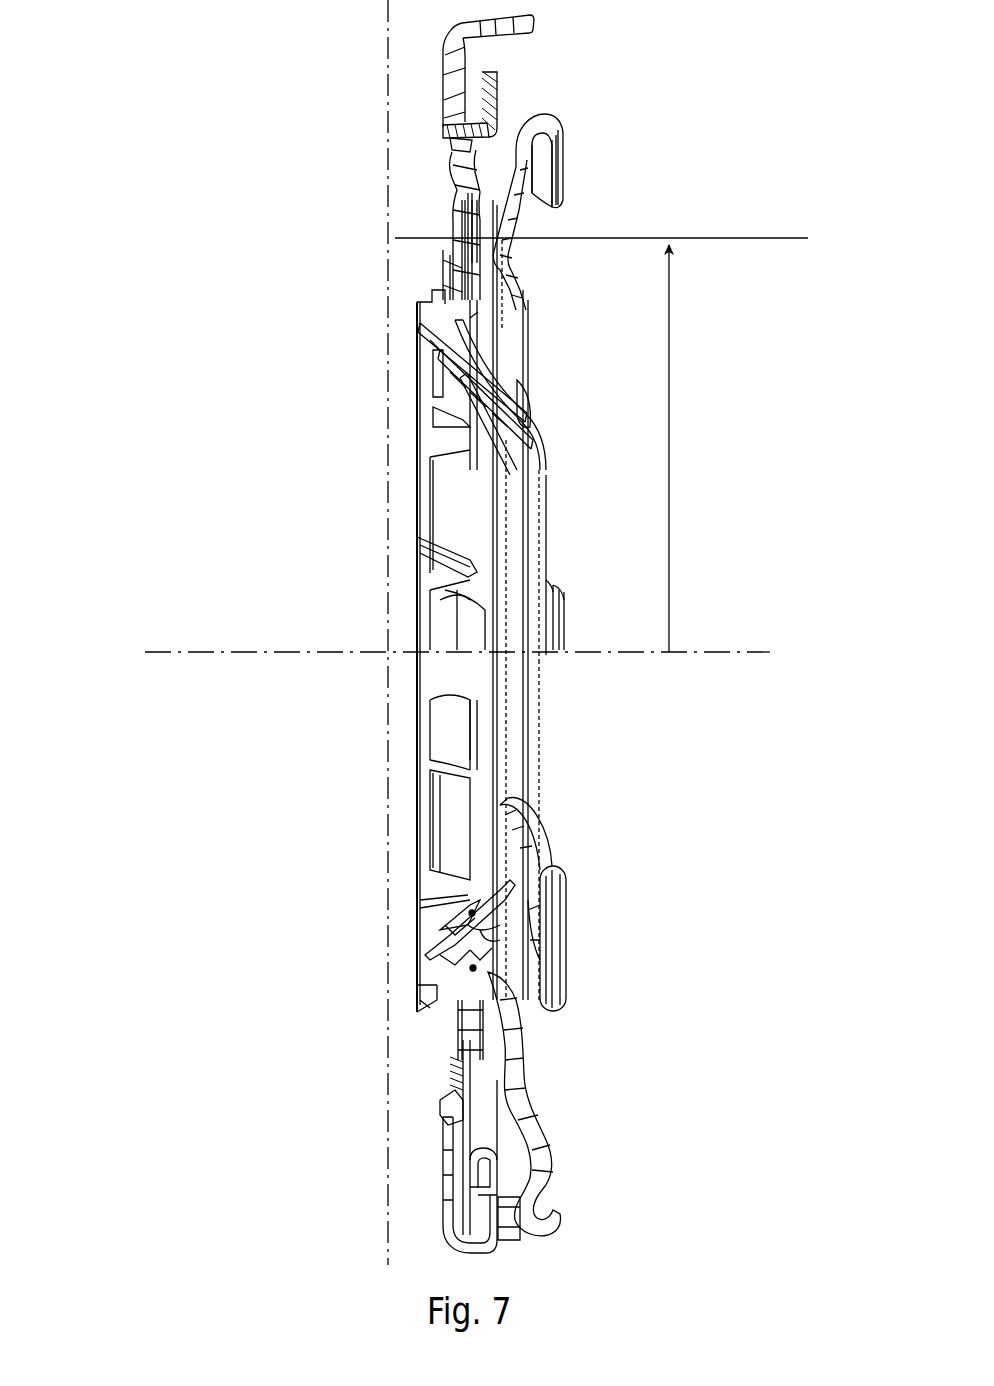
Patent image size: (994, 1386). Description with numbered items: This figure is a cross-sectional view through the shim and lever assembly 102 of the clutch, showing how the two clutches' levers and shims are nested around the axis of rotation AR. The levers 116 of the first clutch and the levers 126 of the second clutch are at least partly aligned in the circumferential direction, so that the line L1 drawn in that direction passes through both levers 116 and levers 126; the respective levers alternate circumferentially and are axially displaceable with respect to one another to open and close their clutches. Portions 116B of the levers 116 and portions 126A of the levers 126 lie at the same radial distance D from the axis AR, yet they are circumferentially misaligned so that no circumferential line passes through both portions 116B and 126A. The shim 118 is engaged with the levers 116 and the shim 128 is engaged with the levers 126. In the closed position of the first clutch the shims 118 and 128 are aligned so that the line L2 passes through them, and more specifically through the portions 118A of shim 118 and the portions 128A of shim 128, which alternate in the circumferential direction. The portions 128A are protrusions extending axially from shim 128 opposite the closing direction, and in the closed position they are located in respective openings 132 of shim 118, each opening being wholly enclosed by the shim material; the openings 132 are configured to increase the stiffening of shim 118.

The backing plate 102 is at (200, 92).
The levers 116 is at (446, 98).
The portions of levers 116B is at (446, 222).
The shim 118 is at (414, 298).
The portions of shim 118A is at (476, 395).
The levers 126 is at (556, 108).
The portions of levers 126A is at (505, 218).
The shim 128 is at (506, 368).
The portions of shim 128A is at (455, 914).
The openings 132 is at (468, 892).
The distance D is at (672, 486).
The axis of rotation AR is at (740, 660).
The line L1 is at (473, 968).
The line L2 is at (472, 913).